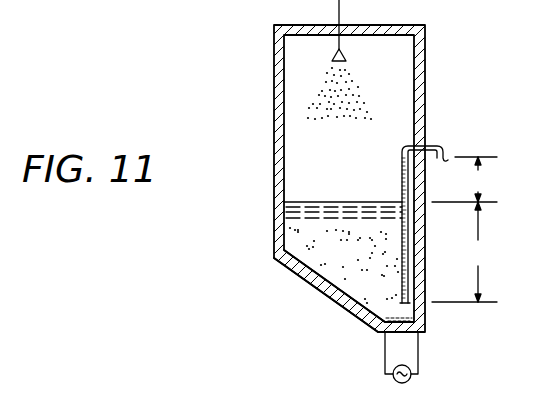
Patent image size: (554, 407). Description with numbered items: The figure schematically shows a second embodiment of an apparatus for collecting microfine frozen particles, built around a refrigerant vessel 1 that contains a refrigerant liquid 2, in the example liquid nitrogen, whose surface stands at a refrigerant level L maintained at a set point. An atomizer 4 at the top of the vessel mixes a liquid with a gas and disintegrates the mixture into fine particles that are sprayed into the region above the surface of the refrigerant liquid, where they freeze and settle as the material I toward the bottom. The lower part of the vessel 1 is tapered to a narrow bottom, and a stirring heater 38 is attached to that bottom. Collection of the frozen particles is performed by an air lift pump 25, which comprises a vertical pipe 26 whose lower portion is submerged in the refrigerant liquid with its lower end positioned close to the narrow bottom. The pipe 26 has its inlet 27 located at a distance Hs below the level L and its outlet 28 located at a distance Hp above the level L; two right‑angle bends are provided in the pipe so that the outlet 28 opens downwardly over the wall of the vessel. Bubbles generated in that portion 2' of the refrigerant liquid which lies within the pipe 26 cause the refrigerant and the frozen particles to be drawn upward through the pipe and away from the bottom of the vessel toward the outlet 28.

The refrigerant vessel 1 is at (427, 42).
The refrigerant liquid 2 is at (325, 291).
The portion of refrigerant liquid within the pipe 2' is at (429, 180).
The atomizer 4 is at (347, 56).
The refrigerant level L is at (313, 203).
The granular material I is at (354, 290).
The air lift pump 25 is at (435, 130).
The pipe 26 is at (402, 176).
The inlet 27 is at (414, 312).
The outlet 28 is at (453, 140).
The stirring heater 38 is at (419, 345).
The distance of outlet above level Hp is at (464, 179).
The distance of inlet below level Hs is at (464, 252).